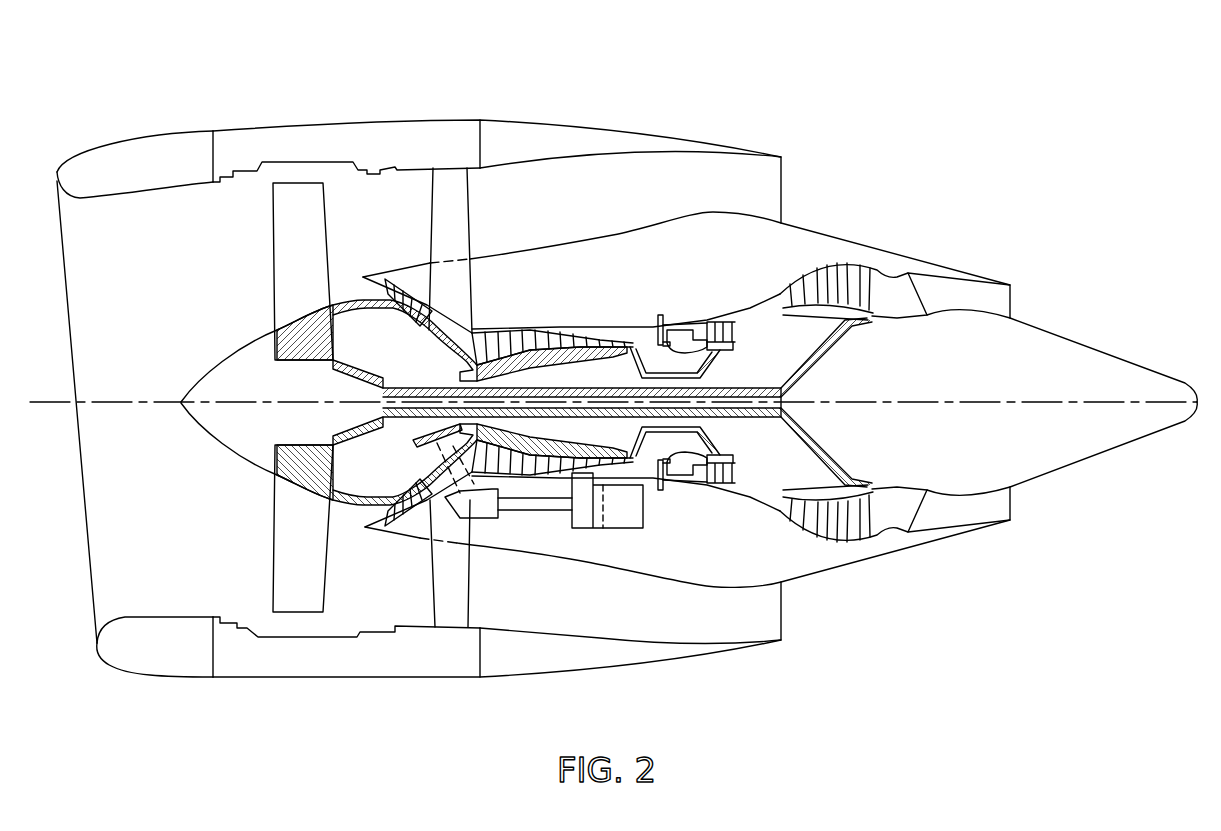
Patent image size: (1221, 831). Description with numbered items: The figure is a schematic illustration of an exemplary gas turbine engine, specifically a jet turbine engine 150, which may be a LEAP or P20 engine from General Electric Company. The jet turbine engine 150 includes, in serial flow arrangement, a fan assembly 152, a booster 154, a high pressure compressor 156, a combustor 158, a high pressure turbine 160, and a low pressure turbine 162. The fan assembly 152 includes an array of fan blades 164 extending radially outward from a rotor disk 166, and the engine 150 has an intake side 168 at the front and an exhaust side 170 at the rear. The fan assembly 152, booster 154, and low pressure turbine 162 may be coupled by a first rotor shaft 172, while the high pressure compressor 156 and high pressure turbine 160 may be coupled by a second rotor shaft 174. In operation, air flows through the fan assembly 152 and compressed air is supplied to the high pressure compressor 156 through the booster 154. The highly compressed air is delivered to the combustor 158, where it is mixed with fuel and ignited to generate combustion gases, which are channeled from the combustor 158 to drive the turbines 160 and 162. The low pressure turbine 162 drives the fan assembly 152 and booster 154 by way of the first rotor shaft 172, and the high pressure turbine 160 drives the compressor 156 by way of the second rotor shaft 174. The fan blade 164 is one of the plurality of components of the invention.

The jet turbine engine 150 is at (123, 80).
The fan assembly 152 is at (294, 568).
The booster 154 is at (412, 280).
The high pressure compressor 156 is at (505, 332).
The combustor 158 is at (680, 318).
The high pressure turbine 160 is at (714, 490).
The low pressure turbine 162 is at (718, 314).
The fan blades 164 is at (282, 252).
The rotor disk 166 is at (318, 466).
The intake side 168 is at (78, 222).
The exhaust side 170 is at (820, 161).
The first rotor shaft 172 is at (740, 420).
The second rotor shaft 174 is at (717, 373).